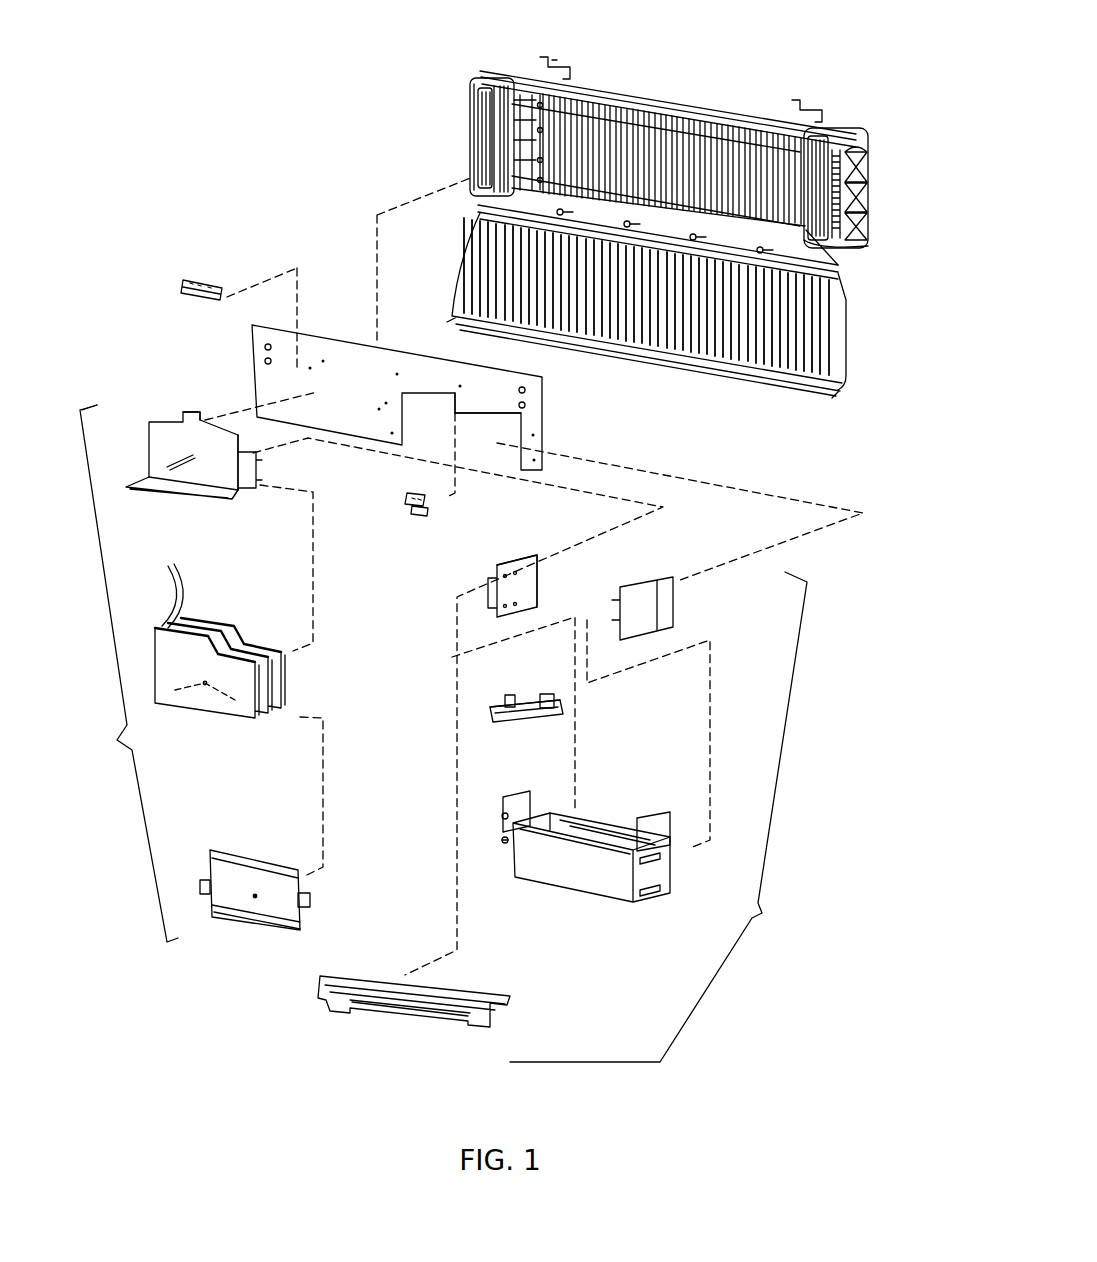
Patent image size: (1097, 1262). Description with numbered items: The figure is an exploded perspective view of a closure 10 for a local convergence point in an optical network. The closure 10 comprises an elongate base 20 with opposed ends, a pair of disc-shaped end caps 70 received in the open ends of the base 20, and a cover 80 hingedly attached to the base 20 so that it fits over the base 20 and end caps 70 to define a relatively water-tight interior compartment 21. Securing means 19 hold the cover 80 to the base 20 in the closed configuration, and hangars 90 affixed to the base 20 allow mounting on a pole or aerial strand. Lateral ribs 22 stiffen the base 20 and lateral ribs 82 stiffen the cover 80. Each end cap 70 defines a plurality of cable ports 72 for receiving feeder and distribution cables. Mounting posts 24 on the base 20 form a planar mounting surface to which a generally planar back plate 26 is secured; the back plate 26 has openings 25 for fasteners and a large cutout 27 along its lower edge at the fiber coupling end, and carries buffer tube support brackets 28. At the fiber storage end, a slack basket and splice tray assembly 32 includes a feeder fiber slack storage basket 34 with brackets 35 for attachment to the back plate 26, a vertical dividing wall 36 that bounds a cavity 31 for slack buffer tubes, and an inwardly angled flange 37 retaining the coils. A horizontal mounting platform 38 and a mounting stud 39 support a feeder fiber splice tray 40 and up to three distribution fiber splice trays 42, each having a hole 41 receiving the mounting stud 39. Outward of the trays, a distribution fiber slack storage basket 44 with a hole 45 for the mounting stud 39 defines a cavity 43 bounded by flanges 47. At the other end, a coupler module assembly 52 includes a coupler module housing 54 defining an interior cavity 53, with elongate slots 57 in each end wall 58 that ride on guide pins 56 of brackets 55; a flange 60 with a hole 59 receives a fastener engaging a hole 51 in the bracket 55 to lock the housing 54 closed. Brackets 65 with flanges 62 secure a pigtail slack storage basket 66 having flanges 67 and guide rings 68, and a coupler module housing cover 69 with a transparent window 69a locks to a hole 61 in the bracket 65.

The closure 10 is at (287, 192).
The means for securing the cover 19 is at (495, 72).
The base 20 is at (641, 229).
The interior compartment 21 is at (633, 105).
The ribs 22 is at (735, 115).
The mounting posts 24 is at (583, 100).
The openings 25 is at (520, 388).
The back plate 26 is at (447, 429).
The cutout 27 is at (472, 430).
The buffer tube support brackets 28 is at (198, 278).
The cavity 31 is at (245, 492).
The slack basket and splice tray assembly 32 is at (129, 673).
The feeder fiber slack storage basket 34 is at (145, 476).
The brackets 35 is at (258, 465).
The dividing wall 36 is at (211, 437).
The flange 37 is at (197, 410).
The mounting platform 38 is at (222, 498).
The mounting stud 39 is at (180, 452).
The feeder fiber splice tray 40 is at (210, 660).
The hole 41 is at (205, 684).
The distribution fiber splice trays 42 is at (152, 587).
The cavity 43 is at (237, 903).
The distribution fiber slack storage basket 44 is at (200, 930).
The hole 45 is at (256, 895).
The flanges 47 is at (255, 935).
The hole 51 is at (493, 580).
The coupler module assembly 52 is at (658, 817).
The interior cavity 53 is at (595, 820).
The coupler module housing 54 is at (574, 853).
The brackets 55 is at (680, 605).
The guide pins 56 is at (510, 605).
The elongate slots 57 is at (655, 888).
The end wall 58 is at (665, 875).
The hole 59 is at (502, 838).
The flange 60 is at (503, 845).
The hole 61 is at (502, 812).
The flange 62 is at (650, 820).
The brackets 65 is at (530, 805).
The pigtail slack storage basket 66 is at (525, 695).
The flanges 67 is at (484, 696).
The guide rings 68 is at (505, 705).
The coupler module housing cover 69 is at (413, 987).
The window 69a is at (400, 1005).
The end caps 70 is at (470, 112).
The cable ports 72 is at (873, 178).
The cover 80 is at (760, 388).
The ribs 82 is at (700, 320).
The hangars 90 is at (560, 55).